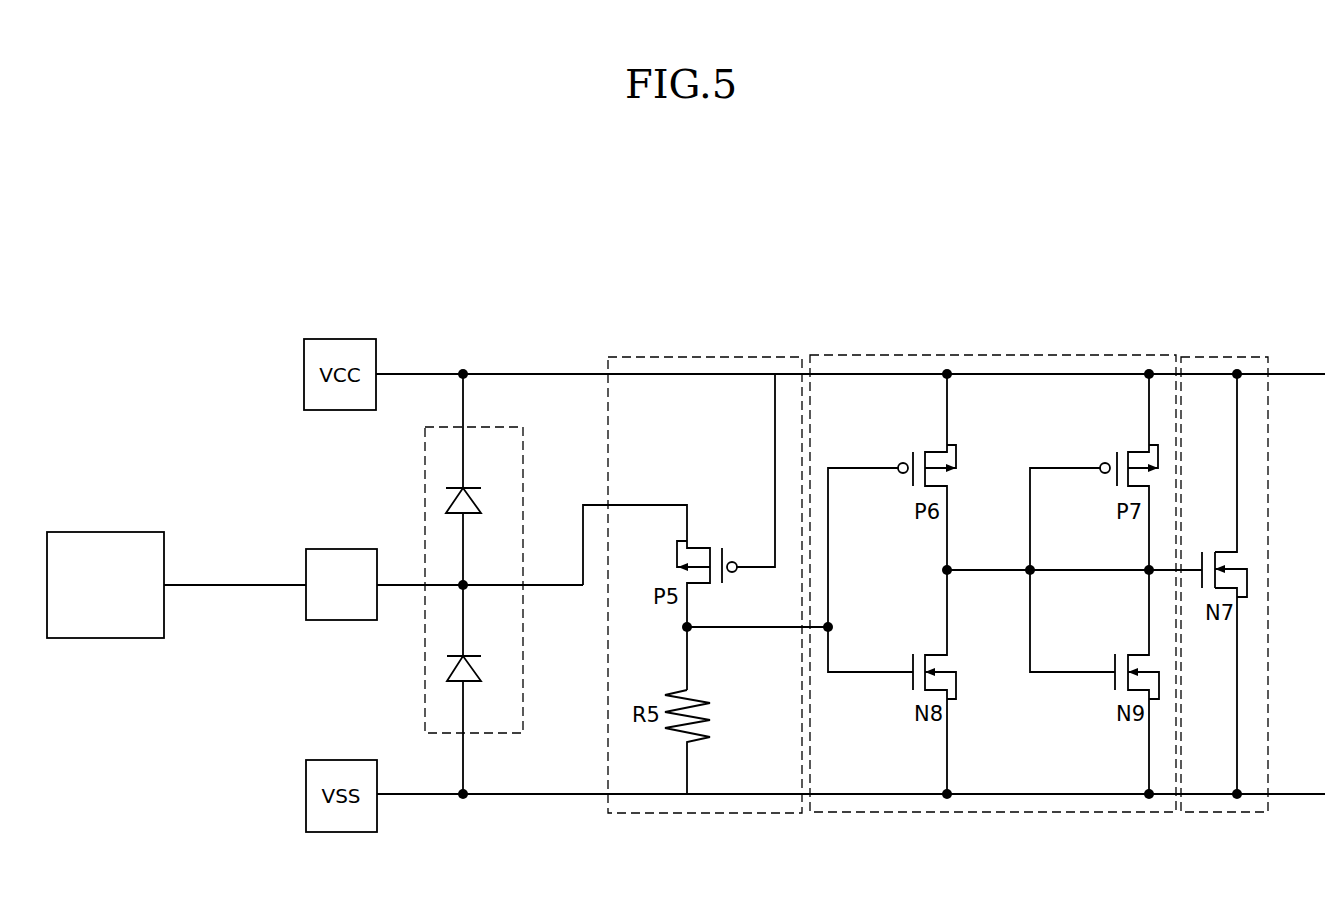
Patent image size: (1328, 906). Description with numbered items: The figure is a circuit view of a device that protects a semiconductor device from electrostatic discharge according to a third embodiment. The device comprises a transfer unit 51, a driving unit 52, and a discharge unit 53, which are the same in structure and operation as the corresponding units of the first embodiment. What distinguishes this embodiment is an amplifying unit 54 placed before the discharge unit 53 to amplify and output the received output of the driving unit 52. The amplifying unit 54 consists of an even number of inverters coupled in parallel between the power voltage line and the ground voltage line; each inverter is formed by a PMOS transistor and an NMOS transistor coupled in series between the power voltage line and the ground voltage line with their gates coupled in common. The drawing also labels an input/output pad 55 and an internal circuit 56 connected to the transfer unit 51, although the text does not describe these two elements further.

The transfer unit 51 is at (490, 427).
The driving unit 52 is at (705, 357).
The discharge unit 53 is at (1223, 357).
The amplifying unit 54 is at (994, 357).
The I/O pad 55 is at (342, 549).
The internal circuit 56 is at (110, 532).